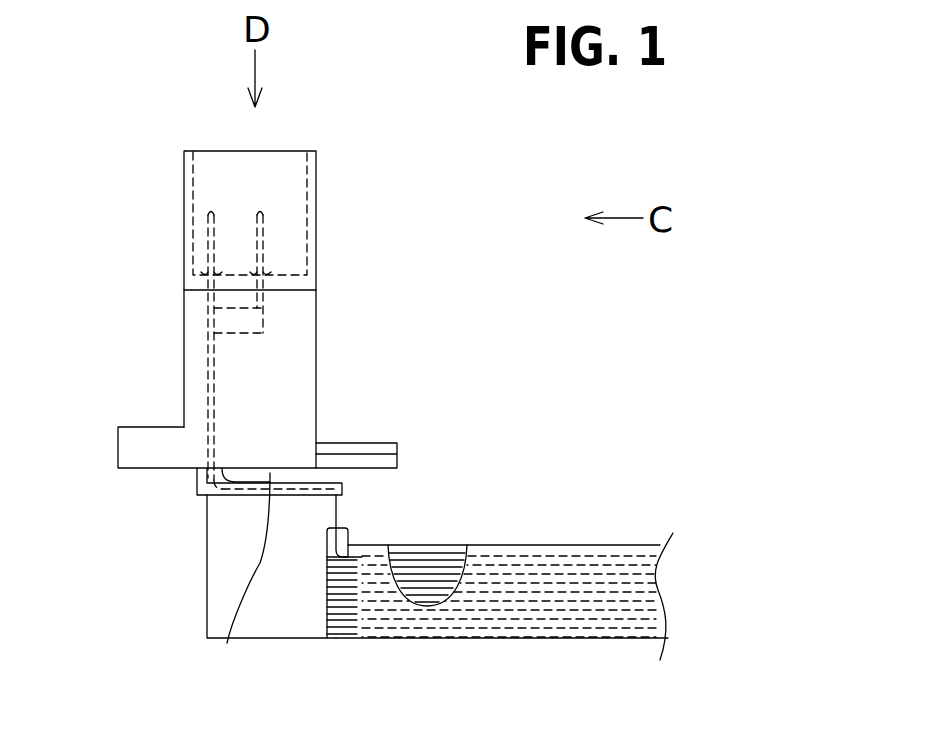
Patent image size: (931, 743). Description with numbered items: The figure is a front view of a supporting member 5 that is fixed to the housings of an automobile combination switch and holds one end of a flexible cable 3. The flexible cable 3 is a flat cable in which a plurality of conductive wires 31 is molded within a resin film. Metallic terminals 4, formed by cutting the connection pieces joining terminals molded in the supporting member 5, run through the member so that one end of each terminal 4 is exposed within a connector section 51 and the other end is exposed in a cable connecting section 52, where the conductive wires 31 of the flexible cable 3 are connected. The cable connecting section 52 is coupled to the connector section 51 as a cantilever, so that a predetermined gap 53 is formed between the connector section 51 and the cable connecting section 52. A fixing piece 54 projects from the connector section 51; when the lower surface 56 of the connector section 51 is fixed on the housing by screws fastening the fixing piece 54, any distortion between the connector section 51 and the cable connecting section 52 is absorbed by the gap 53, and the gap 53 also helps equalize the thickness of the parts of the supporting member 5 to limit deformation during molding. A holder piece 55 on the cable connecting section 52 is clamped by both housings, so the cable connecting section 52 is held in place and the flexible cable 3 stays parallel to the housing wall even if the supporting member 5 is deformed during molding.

The flexible cable 3 is at (631, 536).
The conductive wires 31 is at (438, 596).
The terminals 4 is at (263, 240).
The supporting member 5 is at (330, 328).
The connector section 51 is at (285, 158).
The cable connecting section 52 is at (267, 627).
The gap 53 is at (345, 477).
The fixing piece 54 is at (133, 430).
The holder piece 55 is at (258, 468).
The lower surface 56 is at (268, 468).